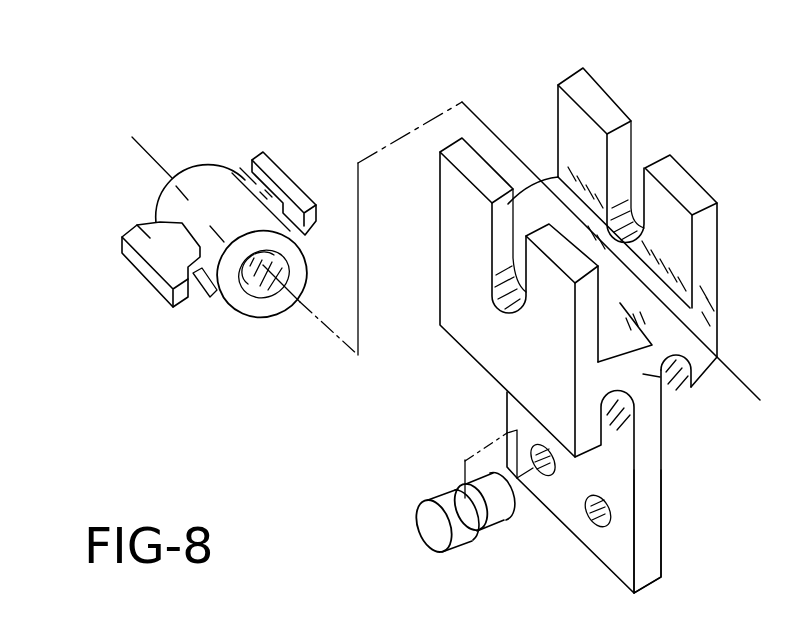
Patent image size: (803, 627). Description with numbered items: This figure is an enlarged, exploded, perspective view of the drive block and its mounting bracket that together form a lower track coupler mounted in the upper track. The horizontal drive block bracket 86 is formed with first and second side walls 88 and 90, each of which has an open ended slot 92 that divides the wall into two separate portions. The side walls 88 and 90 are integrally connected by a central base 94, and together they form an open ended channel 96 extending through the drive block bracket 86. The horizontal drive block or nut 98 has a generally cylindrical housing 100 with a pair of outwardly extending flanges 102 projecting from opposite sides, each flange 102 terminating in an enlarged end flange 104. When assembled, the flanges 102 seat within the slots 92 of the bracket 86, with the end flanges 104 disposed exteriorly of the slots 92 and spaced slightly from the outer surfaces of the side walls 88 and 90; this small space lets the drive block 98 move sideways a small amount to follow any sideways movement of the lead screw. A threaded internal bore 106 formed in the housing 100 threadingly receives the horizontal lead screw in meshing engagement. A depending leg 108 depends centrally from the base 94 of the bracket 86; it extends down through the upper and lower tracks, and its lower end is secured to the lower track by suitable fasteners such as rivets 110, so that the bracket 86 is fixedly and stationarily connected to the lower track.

The drive block bracket 86 is at (540, 128).
The first side wall 88 is at (713, 240).
The second side wall 90 is at (588, 322).
The open ended slot 92 is at (627, 152).
The central base 94 is at (657, 377).
The open ended channel 96 is at (520, 200).
The drive block 98 is at (168, 90).
The cylindrical housing 100 is at (160, 190).
The flange 102 is at (252, 178).
The end flange 104 is at (277, 170).
The threaded internal bore 106 is at (252, 287).
The depending leg 108 is at (650, 505).
The rivet 110 is at (428, 523).